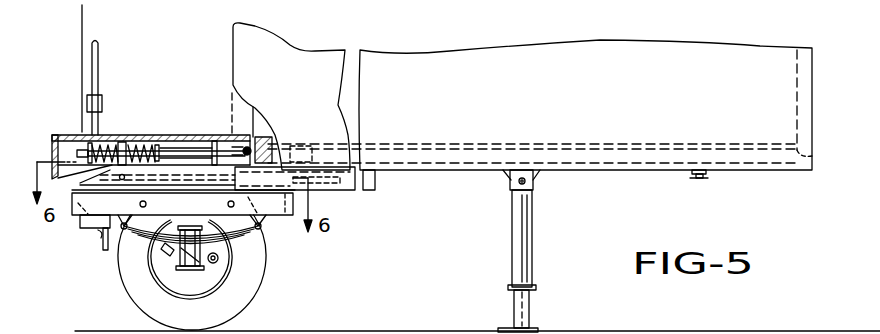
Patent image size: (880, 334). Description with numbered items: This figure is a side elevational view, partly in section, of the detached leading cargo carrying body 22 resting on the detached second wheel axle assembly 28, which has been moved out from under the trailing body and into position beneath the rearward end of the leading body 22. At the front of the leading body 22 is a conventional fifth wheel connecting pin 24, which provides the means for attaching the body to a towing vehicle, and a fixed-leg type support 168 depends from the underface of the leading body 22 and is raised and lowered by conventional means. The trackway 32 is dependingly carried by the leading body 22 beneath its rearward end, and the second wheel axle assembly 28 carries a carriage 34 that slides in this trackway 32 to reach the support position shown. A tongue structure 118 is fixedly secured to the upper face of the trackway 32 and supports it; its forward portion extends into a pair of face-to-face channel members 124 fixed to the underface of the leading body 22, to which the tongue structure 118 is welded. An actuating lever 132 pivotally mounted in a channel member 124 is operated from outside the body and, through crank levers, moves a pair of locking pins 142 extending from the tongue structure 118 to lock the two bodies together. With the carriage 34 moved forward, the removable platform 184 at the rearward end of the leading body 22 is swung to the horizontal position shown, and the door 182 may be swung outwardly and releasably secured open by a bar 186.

The leading cargo carrying body 22 is at (616, 178).
The fifth wheel connecting pin 24 is at (705, 179).
The second wheel axle assembly 28 is at (272, 274).
The trackway 32 is at (286, 222).
The carriage 34 is at (78, 222).
The tongue structure 118 is at (163, 170).
The channel members 124 is at (377, 181).
The actuating lever 132 is at (330, 178).
The locking pins 142 is at (122, 174).
The support 168 is at (522, 247).
The door 182 is at (92, 23).
The removable platform 184 is at (68, 133).
The bar 186 is at (99, 72).